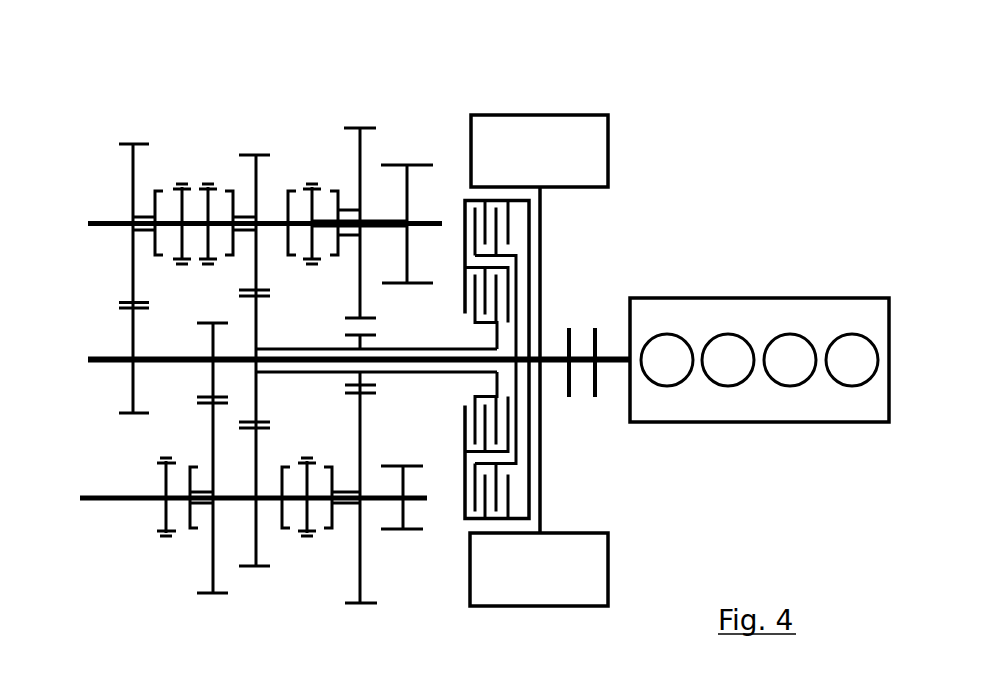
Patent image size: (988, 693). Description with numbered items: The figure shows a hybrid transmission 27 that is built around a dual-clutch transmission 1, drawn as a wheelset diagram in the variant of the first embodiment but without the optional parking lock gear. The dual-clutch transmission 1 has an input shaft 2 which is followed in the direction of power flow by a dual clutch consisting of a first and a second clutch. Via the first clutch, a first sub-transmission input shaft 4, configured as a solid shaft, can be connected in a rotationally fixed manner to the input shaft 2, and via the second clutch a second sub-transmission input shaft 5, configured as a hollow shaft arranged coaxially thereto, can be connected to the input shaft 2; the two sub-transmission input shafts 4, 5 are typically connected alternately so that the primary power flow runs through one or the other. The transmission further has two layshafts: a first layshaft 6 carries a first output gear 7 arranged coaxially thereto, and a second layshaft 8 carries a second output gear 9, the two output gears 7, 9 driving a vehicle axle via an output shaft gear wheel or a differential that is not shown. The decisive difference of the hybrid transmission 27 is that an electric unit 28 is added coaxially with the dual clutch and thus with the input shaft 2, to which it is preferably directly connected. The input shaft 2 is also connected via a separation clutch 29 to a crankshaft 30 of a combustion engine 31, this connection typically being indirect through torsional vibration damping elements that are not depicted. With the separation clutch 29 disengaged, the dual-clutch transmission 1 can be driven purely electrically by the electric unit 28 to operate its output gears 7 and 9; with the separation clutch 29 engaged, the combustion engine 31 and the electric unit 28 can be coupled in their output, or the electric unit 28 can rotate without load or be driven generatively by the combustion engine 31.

The dual-clutch transmission 1 is at (140, 517).
The input shaft 2 is at (550, 357).
The first sub-transmission input shaft 4 is at (100, 358).
The second sub-transmission input shaft 5 is at (412, 375).
The first layshaft 6 is at (98, 224).
The first output gear 7 is at (410, 163).
The second layshaft 8 is at (108, 495).
The second output gear 9 is at (407, 532).
The hybrid transmission 27 is at (462, 355).
The electric unit 28 is at (557, 133).
The separation clutch 29 is at (583, 355).
The crankshaft 30 is at (607, 363).
The combustion engine 31 is at (767, 402).